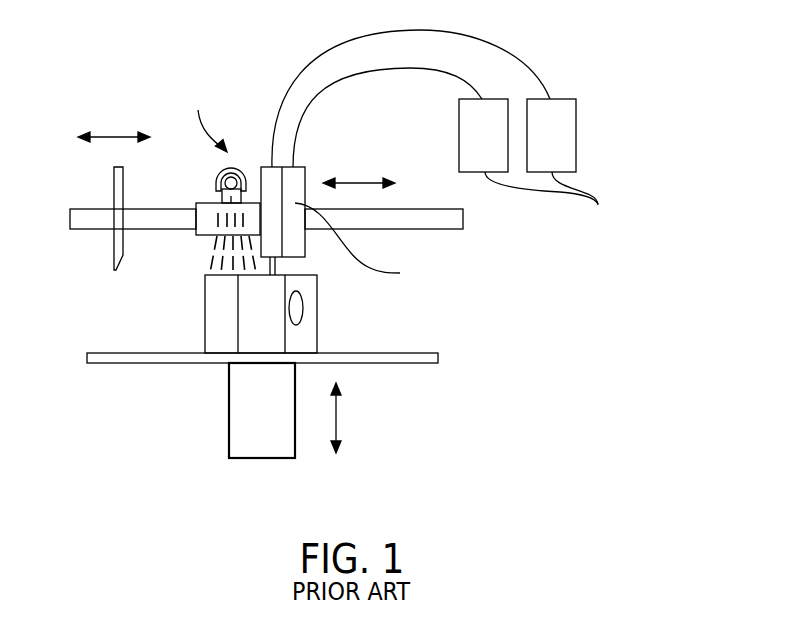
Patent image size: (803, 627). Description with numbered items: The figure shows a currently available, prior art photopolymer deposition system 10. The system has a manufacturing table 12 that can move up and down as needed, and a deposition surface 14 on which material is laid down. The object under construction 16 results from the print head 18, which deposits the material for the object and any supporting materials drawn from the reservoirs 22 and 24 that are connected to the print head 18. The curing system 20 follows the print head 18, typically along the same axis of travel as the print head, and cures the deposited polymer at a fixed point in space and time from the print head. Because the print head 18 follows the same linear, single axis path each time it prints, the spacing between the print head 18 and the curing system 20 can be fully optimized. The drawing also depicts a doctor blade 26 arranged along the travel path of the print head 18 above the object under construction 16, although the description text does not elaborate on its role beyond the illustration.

The photopolymer deposition system 10 is at (82, 90).
The manufacturing table 12 is at (295, 458).
The deposition surface 14 is at (438, 356).
The object under construction 16 is at (317, 315).
The print head 18 is at (305, 167).
The curing system 20 is at (220, 180).
The reservoir 22 is at (575, 99).
The reservoir 24 is at (508, 99).
The doctor blade 26 is at (113, 176).